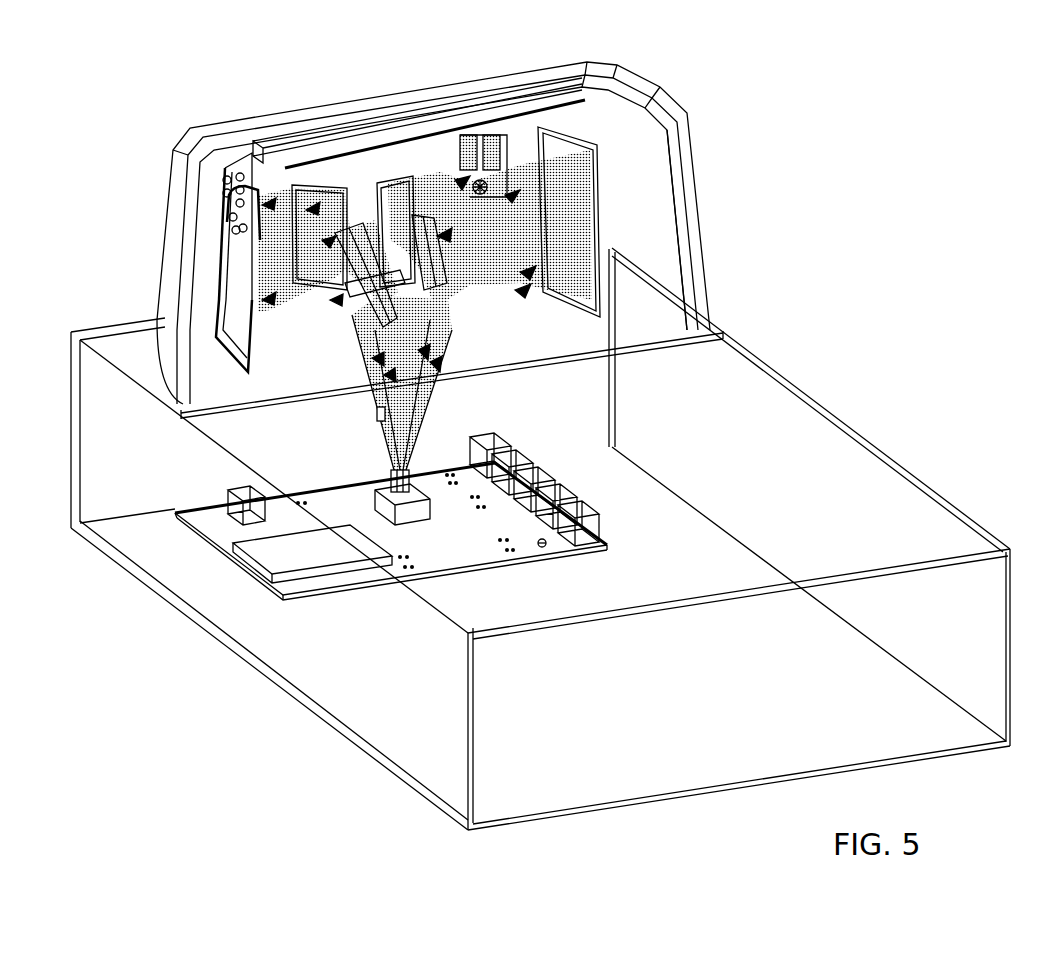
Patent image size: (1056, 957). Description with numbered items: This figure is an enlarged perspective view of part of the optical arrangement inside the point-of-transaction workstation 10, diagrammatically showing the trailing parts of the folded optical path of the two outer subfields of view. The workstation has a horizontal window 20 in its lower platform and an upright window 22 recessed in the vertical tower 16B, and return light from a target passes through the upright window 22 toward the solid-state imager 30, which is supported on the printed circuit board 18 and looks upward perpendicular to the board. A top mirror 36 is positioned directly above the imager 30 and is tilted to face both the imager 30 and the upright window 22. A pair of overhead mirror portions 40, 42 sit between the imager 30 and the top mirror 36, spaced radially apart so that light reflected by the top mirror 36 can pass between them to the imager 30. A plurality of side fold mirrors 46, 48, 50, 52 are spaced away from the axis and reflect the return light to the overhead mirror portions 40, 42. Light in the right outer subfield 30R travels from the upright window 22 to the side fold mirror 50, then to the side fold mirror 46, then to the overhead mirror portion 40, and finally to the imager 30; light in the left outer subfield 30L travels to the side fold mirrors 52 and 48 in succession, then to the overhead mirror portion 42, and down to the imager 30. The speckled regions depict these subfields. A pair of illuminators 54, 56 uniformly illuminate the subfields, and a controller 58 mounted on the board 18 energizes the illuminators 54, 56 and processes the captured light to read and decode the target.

The point-of-transaction workstation 10 is at (718, 105).
The vertical tower 16B is at (618, 70).
The printed circuit board 18 is at (330, 500).
The horizontal window 20 is at (660, 450).
The upright window 22 is at (653, 212).
The solid-state imager 30 is at (380, 462).
The left outer subfield of view 30L is at (368, 360).
The right outer subfield of view 30R is at (438, 338).
The top mirror 36 is at (330, 188).
The overhead mirror portion 40 is at (447, 318).
The overhead mirror portion 42 is at (362, 304).
The side fold mirror 46 is at (403, 182).
The side fold mirror 48 is at (296, 183).
The side fold mirror 50 is at (598, 158).
The side fold mirror 52 is at (246, 348).
The illuminator 54 is at (456, 205).
The illuminator 56 is at (252, 165).
The controller 58 is at (260, 557).